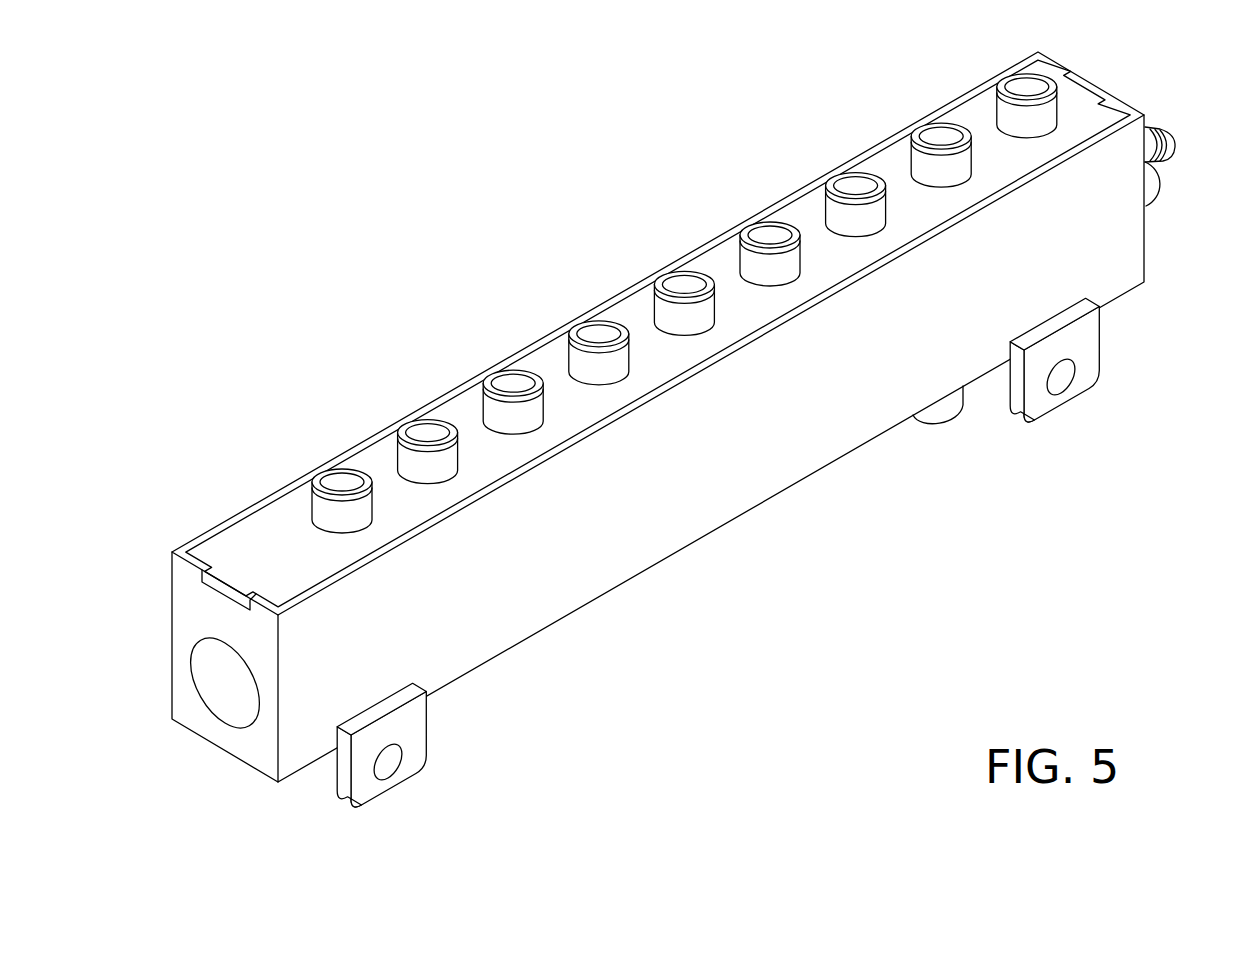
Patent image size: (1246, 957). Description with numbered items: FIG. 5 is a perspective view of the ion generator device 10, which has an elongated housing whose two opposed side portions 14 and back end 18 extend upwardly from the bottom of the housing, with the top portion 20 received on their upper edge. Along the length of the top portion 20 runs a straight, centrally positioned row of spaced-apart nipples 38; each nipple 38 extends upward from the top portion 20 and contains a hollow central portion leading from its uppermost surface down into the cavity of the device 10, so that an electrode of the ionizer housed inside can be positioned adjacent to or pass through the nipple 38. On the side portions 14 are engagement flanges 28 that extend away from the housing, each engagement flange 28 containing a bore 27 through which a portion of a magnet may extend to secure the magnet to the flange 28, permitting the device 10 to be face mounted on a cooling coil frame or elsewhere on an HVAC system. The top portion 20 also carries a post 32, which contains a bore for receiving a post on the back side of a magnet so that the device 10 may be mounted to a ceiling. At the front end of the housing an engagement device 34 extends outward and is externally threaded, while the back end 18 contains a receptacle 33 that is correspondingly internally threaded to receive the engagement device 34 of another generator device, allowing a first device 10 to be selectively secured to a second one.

The ion generator device 10 is at (669, 463).
The side portion 14 is at (628, 436).
The back end 18 is at (195, 651).
The top portion 20 is at (267, 528).
The bore 27 is at (1055, 387).
The engagement flange 28 is at (372, 796).
The post 32 is at (943, 410).
The receptacle 33 is at (220, 697).
The engagement device 34 is at (1150, 128).
The nipple 38 is at (518, 410).